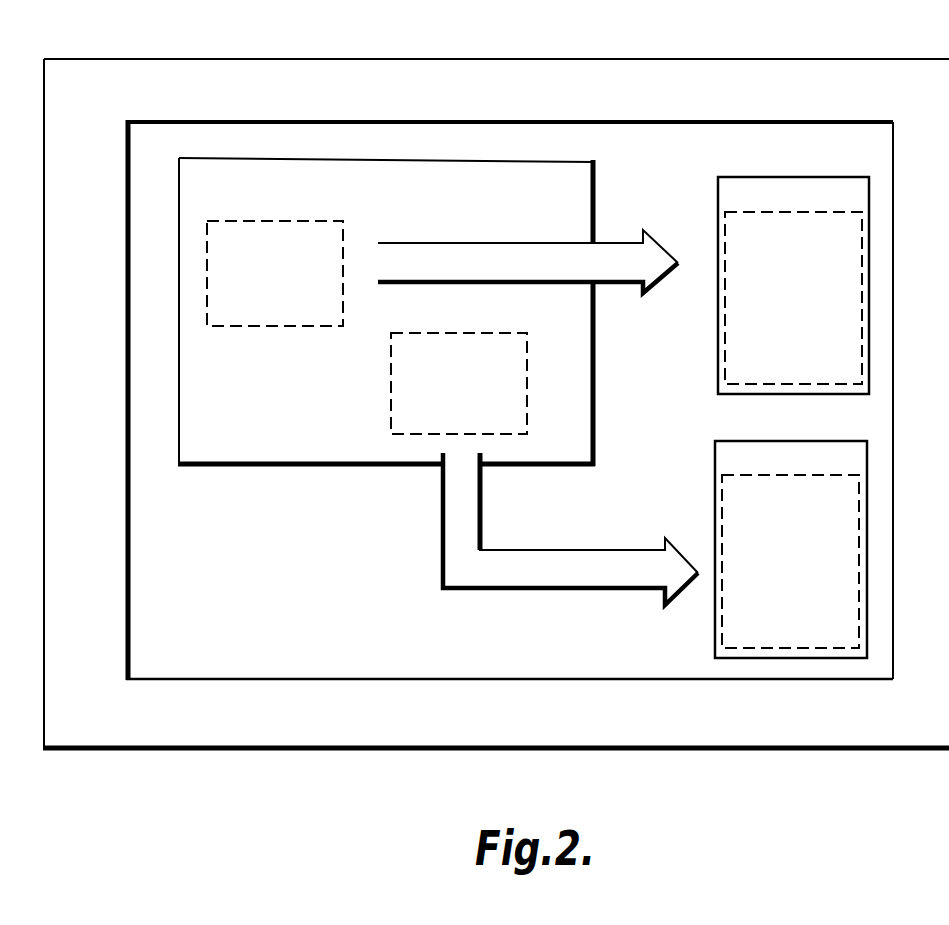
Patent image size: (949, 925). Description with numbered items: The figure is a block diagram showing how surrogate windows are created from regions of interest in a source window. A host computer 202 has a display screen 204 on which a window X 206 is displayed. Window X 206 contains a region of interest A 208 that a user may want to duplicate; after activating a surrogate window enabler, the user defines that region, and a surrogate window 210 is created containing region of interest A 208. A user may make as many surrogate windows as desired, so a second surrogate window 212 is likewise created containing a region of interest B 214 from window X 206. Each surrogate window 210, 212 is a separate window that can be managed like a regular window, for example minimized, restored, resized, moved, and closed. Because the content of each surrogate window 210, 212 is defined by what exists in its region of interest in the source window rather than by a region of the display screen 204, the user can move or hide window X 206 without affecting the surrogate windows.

The host computer 202 is at (345, 59).
The display screen 204 is at (620, 121).
The window X 206 is at (596, 198).
The region of interest A 208 is at (344, 236).
The surrogate window 210 is at (864, 250).
The surrogate window 212 is at (860, 519).
The region of interest B 214 is at (567, 362).